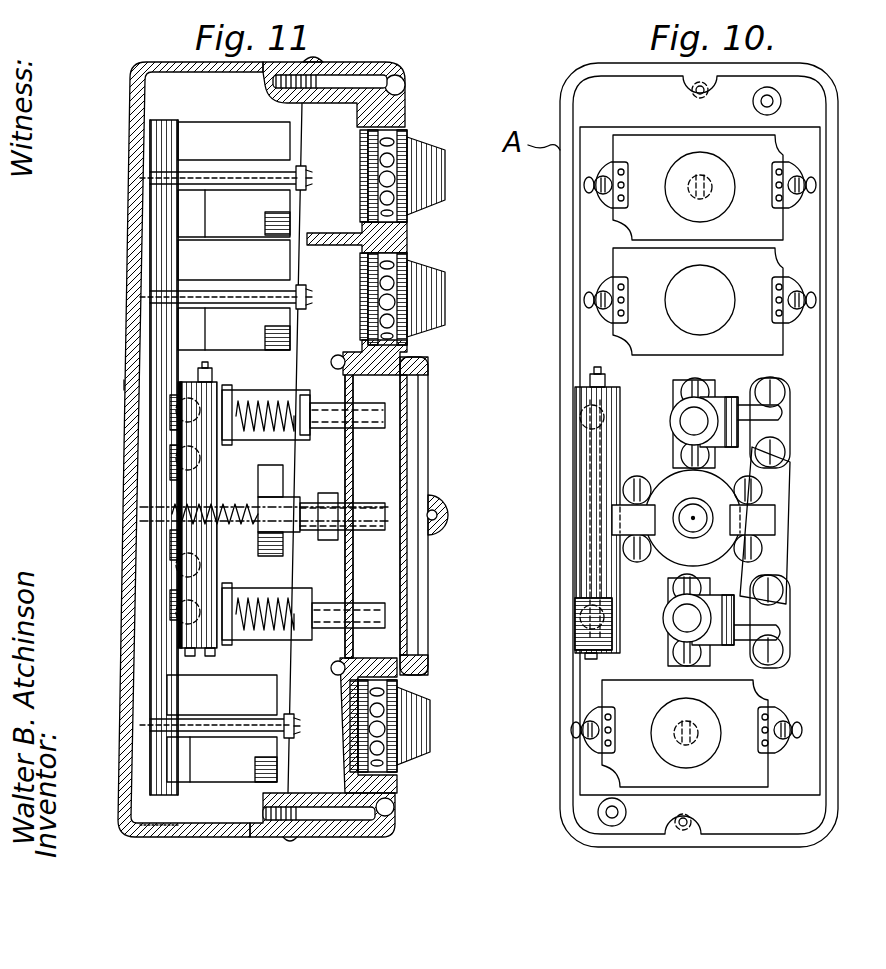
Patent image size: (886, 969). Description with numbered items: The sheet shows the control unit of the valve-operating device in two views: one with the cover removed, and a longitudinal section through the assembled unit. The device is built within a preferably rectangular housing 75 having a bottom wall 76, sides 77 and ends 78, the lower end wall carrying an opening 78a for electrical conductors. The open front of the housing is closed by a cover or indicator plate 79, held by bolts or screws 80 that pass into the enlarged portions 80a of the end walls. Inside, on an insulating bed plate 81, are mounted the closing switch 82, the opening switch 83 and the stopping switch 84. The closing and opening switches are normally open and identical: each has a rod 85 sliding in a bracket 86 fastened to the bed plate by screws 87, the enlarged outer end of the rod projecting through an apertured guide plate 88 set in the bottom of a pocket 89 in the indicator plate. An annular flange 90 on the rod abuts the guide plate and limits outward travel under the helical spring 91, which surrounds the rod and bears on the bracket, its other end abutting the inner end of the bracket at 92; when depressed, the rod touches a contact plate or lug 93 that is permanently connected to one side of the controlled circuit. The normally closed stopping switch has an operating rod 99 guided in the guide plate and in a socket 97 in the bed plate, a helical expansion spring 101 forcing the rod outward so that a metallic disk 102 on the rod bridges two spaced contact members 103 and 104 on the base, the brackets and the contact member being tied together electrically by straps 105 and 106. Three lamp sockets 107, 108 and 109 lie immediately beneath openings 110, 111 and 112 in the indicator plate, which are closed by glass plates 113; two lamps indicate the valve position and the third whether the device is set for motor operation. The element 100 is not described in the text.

In FIG. 10, the housing 75 is at (876, 721).
In FIG. 11, the bottom wall 76 is at (129, 385).
In FIG. 10, the side 77 is at (838, 228).
In FIG. 11, the end 78 is at (181, 62).
In FIG. 10, the end 78 is at (765, 72).
In FIG. 11, the opening 78a is at (175, 838).
In FIG. 11, the indicator plate 79 is at (392, 790).
In FIG. 11, the bolt or screw 80 is at (350, 76).
In FIG. 10, the enlarged portion 80a is at (702, 824).
In FIG. 11, the insulating bed plate 81 is at (148, 452).
In FIG. 11, the closing switch 82 is at (386, 612).
In FIG. 10, the closing switch 82 is at (670, 614).
In FIG. 11, the opening switch 83 is at (386, 416).
In FIG. 10, the opening switch 83 is at (672, 418).
In FIG. 11, the stopping switch 84 is at (408, 490).
In FIG. 10, the stopping switch 84 is at (690, 512).
In FIG. 11, the rod 85 is at (360, 400).
In FIG. 11, the bracket 86 is at (284, 390).
In FIG. 10, the bracket 86 is at (722, 406).
In FIG. 10, the screw 87 is at (776, 394).
In FIG. 11, the guide plate 88 is at (353, 475).
In FIG. 11, the pocket 89 is at (385, 578).
In FIG. 11, the annular flange 90 is at (304, 398).
In FIG. 11, the helical spring 91 is at (258, 400).
In FIG. 11, the inner end of bracket 92 is at (224, 382).
In FIG. 11, the contact plate or lug 93 is at (205, 372).
In FIG. 10, the contact plate or lug 93 is at (690, 396).
In FIG. 11, the socket 97 is at (140, 533).
In FIG. 11, the operating rod 99 is at (280, 495).
In FIG. 11, the block lower part 100 is at (290, 540).
In FIG. 11, the helical expansion spring 101 is at (235, 497).
In FIG. 11, the metallic disk 102 is at (278, 458).
In FIG. 10, the metallic disk 102 is at (668, 552).
In FIG. 10, the contact member 103 is at (617, 517).
In FIG. 10, the contact member 104 is at (760, 515).
In FIG. 10, the strap 105 is at (795, 466).
In FIG. 10, the strap 106 is at (766, 565).
In FIG. 11, the socket 107 is at (235, 698).
In FIG. 10, the socket 107 is at (700, 770).
In FIG. 11, the socket 108 is at (226, 295).
In FIG. 10, the socket 108 is at (748, 266).
In FIG. 11, the socket 109 is at (246, 150).
In FIG. 10, the socket 109 is at (686, 140).
In FIG. 11, the opening 110 is at (352, 700).
In FIG. 11, the opening 111 is at (362, 262).
In FIG. 11, the opening 112 is at (362, 160).
In FIG. 11, the glass plate 113 is at (405, 175).